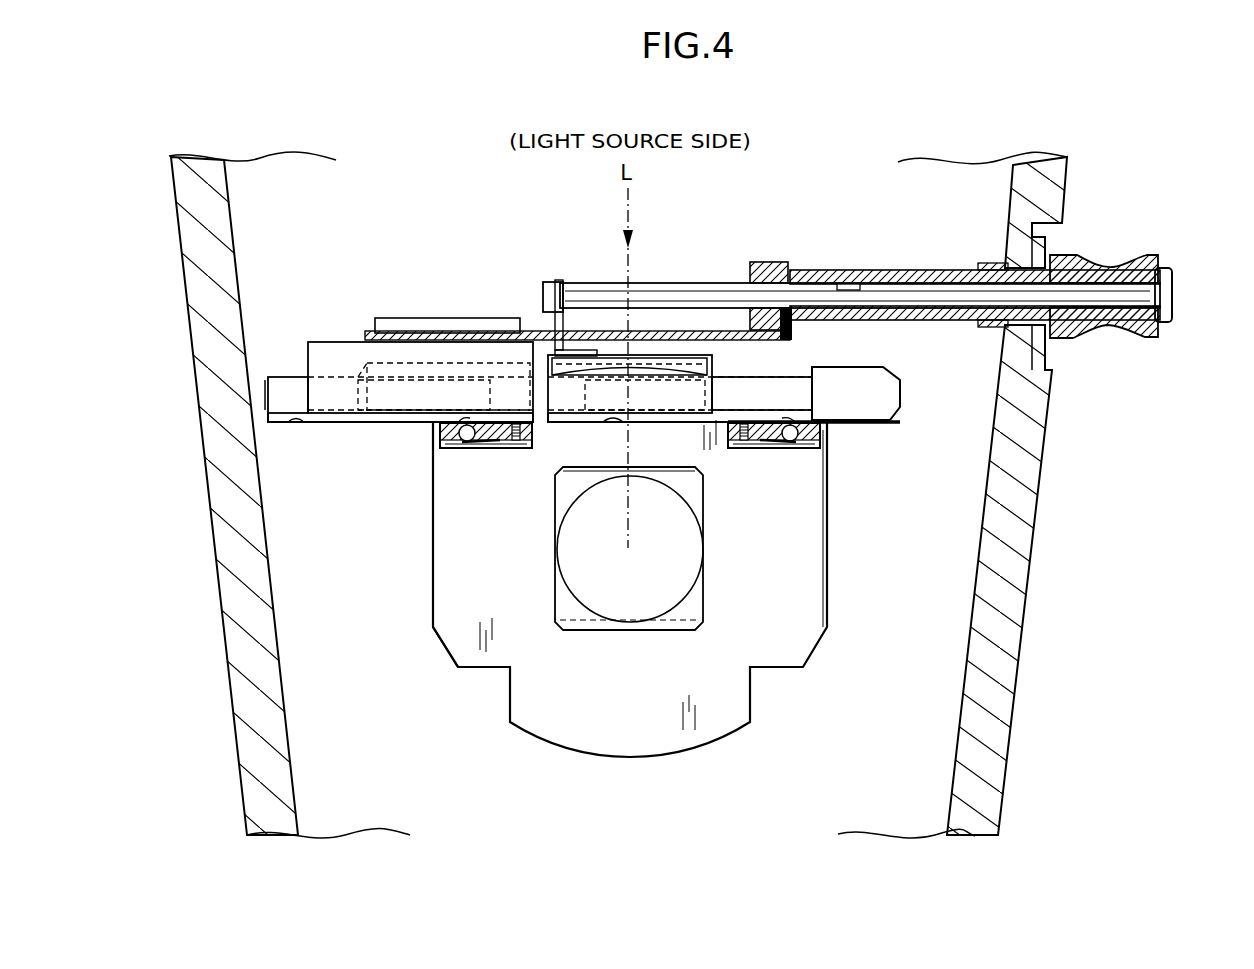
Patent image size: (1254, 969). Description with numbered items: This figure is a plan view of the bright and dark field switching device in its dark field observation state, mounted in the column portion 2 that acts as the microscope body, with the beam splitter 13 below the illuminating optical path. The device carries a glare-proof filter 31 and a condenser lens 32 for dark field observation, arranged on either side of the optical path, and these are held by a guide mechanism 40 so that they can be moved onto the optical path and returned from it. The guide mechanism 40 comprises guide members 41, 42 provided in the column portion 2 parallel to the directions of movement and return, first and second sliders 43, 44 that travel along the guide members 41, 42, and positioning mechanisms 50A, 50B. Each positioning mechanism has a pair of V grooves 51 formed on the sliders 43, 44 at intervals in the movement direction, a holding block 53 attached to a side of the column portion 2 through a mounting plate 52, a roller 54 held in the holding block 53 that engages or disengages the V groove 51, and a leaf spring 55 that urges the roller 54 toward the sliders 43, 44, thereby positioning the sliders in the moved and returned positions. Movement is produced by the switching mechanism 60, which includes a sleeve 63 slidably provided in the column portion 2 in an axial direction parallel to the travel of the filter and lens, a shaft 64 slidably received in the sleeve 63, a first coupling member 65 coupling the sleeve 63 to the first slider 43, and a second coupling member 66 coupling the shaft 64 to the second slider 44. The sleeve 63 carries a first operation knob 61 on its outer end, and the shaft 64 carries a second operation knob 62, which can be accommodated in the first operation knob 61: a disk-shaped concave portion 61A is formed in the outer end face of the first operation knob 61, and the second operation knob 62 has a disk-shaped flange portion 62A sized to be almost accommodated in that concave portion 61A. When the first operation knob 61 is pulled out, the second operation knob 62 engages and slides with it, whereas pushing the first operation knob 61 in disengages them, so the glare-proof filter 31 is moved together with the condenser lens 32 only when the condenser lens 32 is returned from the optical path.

The column portion 2 is at (258, 800).
The beam splitter 13 is at (703, 573).
The glare-proof filter 31 is at (432, 318).
The condenser lens 32 is at (692, 368).
The guide mechanism 40 is at (572, 414).
The guide member 41 is at (263, 388).
The guide member 42 is at (815, 398).
The first slider 43 is at (296, 388).
The second slider 44 is at (812, 380).
The positioning mechanism 50A is at (405, 522).
The positioning mechanism 50B is at (872, 523).
The V groove 51 is at (297, 424).
The mounting plate 52 is at (455, 643).
The holding block 53 is at (440, 448).
The roller 54 is at (468, 446).
The leaf spring 55 is at (516, 448).
The switching mechanism 60 is at (804, 258).
The first operation knob 61 is at (1103, 262).
The concave portion 61A is at (1158, 262).
The second operation knob 62 is at (1172, 287).
The flange portion 62A is at (1172, 318).
The sleeve 63 is at (912, 270).
The shaft 64 is at (950, 300).
The first coupling member 65 is at (542, 330).
The second coupling member 66 is at (557, 282).